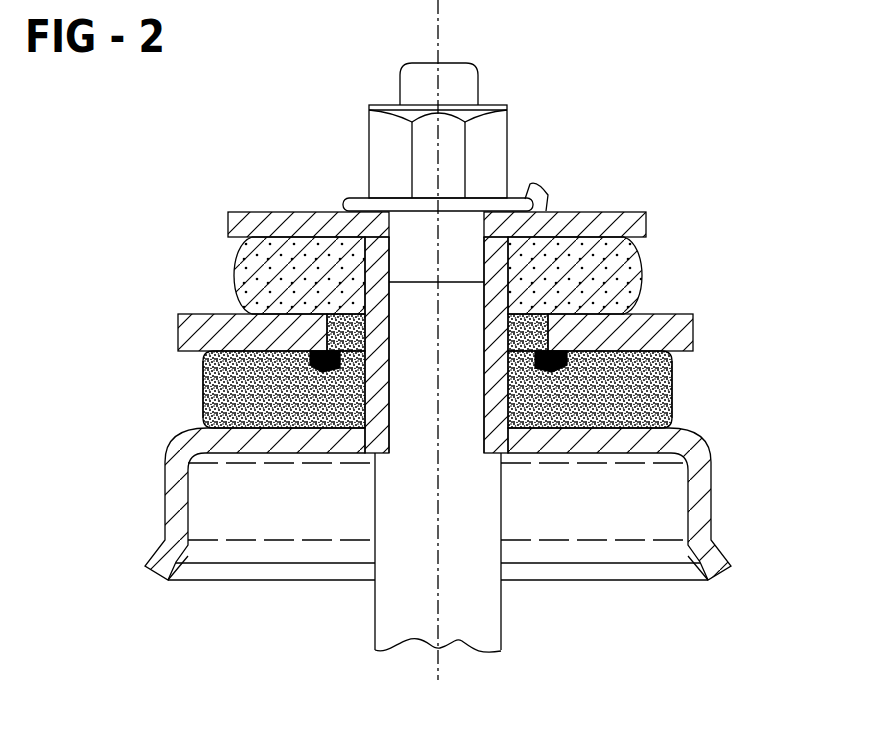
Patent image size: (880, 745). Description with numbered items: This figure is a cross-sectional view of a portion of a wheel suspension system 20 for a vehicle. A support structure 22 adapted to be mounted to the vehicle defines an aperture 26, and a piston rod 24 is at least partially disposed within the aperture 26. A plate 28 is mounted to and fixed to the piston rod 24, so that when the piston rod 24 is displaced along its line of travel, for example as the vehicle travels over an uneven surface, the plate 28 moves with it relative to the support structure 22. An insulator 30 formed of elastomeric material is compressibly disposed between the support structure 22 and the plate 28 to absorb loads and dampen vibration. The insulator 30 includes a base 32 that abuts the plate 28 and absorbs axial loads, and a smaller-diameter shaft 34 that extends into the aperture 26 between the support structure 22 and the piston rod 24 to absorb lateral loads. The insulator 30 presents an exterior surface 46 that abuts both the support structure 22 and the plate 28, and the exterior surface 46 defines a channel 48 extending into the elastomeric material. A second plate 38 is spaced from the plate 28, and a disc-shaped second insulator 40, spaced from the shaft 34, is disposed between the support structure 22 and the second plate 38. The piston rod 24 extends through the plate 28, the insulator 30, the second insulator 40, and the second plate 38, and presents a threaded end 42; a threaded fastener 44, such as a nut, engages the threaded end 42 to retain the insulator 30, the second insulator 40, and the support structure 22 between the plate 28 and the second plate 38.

The wheel suspension system 20 is at (688, 150).
The support structure 22 is at (178, 330).
The piston rod 24 is at (388, 613).
The aperture 26 is at (337, 355).
The plate 28 is at (178, 453).
The insulator 30 is at (441, 383).
The base 32 is at (225, 393).
The shaft 34 is at (323, 343).
The second plate 38 is at (612, 222).
The second insulator 40 is at (633, 270).
The threaded end 42 is at (463, 82).
The threaded fastener 44 is at (503, 142).
The exterior surface 46 is at (203, 377).
The channel 48 is at (655, 396).